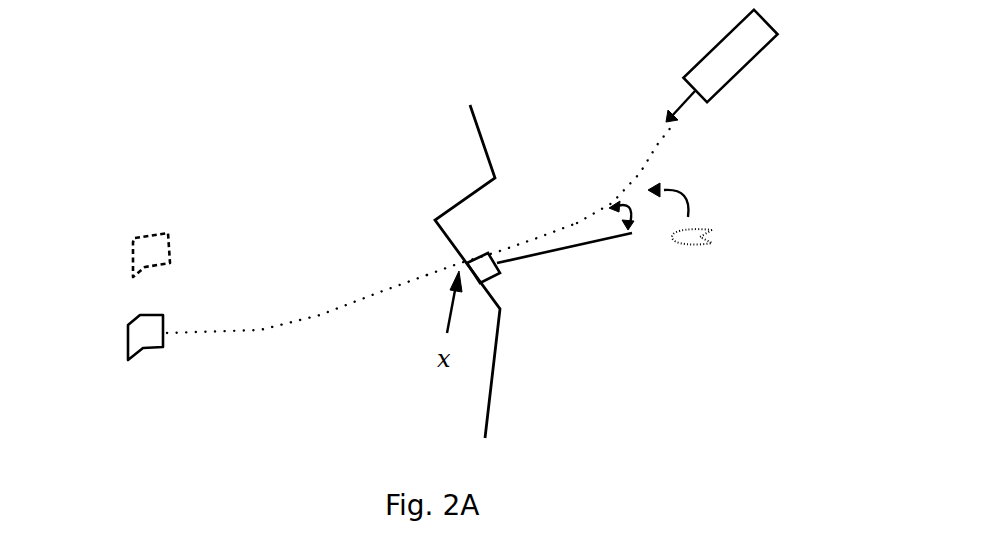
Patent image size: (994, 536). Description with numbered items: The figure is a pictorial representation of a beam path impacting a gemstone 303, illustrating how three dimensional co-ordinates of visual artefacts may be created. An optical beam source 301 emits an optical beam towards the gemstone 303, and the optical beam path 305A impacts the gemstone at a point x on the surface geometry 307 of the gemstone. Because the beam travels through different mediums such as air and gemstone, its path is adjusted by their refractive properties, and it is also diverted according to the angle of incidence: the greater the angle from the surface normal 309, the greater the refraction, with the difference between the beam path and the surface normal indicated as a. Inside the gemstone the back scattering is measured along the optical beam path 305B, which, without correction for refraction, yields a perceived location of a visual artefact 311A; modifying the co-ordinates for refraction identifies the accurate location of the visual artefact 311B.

The optical beam source 301 is at (722, 66).
The gemstone 303 is at (272, 104).
The optical beam path 305A is at (618, 147).
The optical beam path within the gemstone 305B is at (297, 363).
The surface geometry 307 is at (516, 271).
The surface normal 309 is at (559, 277).
The visual artefact (perceived location) 311A is at (101, 286).
The visual artefact (accurate location) 311B is at (126, 201).